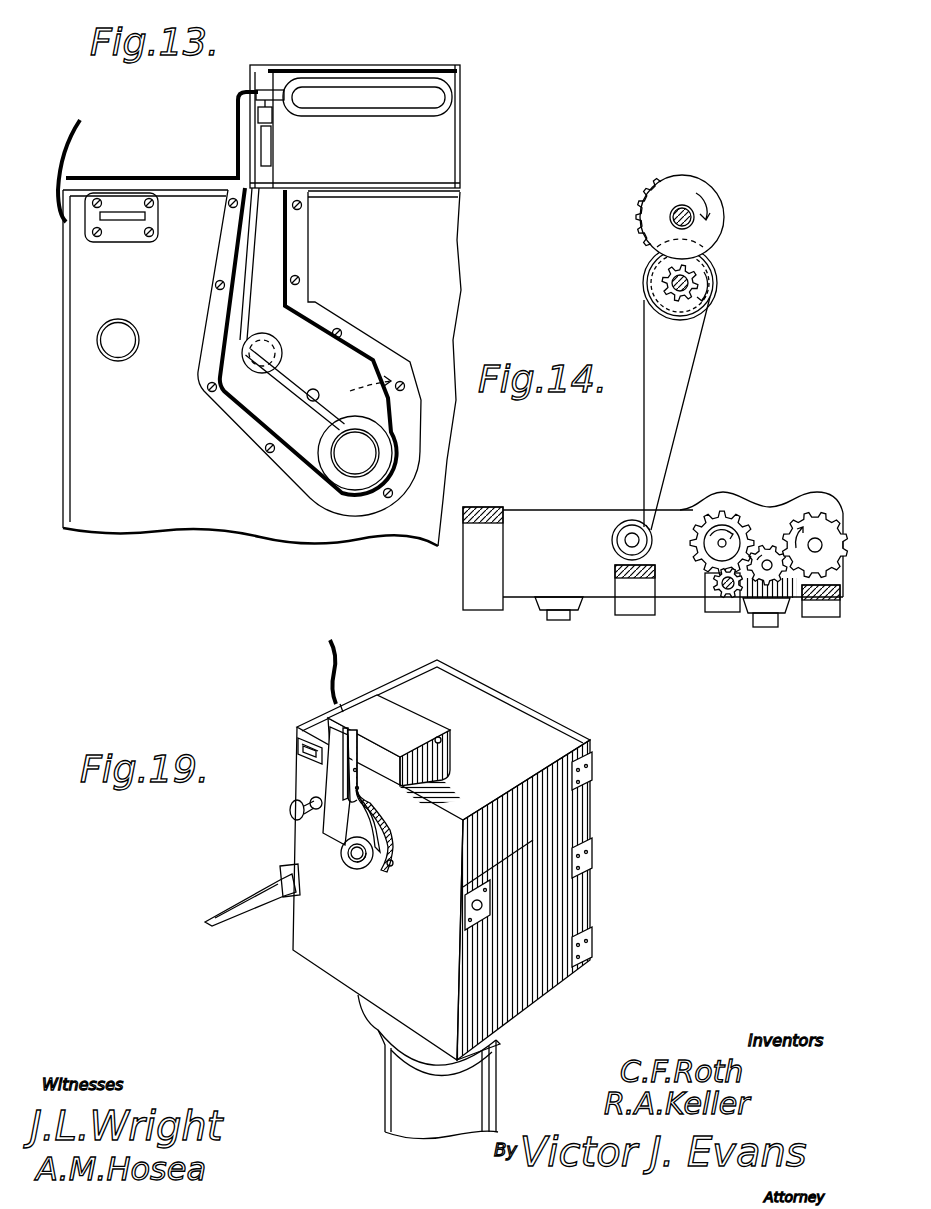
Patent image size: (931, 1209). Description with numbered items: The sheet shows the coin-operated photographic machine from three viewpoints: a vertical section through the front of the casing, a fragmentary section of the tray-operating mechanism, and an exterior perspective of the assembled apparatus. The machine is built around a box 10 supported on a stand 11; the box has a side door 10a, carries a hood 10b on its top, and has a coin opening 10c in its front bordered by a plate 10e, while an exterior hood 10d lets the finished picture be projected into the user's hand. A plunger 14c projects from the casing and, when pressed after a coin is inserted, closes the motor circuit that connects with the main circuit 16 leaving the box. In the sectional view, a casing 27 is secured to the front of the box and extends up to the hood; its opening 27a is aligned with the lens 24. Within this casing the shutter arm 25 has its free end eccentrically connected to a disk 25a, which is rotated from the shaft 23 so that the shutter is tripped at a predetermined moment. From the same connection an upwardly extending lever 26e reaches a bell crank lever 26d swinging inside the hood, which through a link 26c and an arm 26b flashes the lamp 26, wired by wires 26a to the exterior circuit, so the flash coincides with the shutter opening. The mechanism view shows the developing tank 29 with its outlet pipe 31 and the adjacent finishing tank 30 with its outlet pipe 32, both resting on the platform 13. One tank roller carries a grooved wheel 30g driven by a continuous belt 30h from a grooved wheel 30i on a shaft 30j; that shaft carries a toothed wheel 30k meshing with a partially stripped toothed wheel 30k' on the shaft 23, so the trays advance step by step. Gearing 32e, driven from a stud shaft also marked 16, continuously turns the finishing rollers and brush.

In FIG. 13, the box 10 is at (462, 212).
In FIG. 19, the box 10 is at (533, 726).
In FIG. 19, the side door 10a is at (572, 900).
In FIG. 13, the hood 10b is at (420, 72).
In FIG. 19, the hood 10b is at (403, 718).
In FIG. 13, the coin opening 10c is at (157, 217).
In FIG. 19, the coin opening 10c is at (308, 758).
In FIG. 19, the exterior hood 10d is at (280, 878).
In FIG. 13, the plate 10e is at (128, 233).
In FIG. 19, the plate 10e is at (298, 740).
In FIG. 19, the stand 11 is at (387, 1086).
In FIG. 14, the platform 13 is at (506, 557).
In FIG. 13, the plunger 14c is at (117, 350).
In FIG. 19, the plunger 14c is at (290, 812).
In FIG. 13, the main circuit 16 is at (74, 138).
In FIG. 14, the main circuit 16 is at (729, 590).
In FIG. 19, the main circuit 16 is at (337, 640).
In FIG. 14, the shaft 23 is at (678, 210).
In FIG. 13, the lens 24 is at (343, 456).
In FIG. 19, the lens 24 is at (370, 860).
In FIG. 13, the shutter arm 25 is at (306, 400).
In FIG. 13, the disk 25a is at (283, 353).
In FIG. 13, the lamp 26 is at (372, 118).
In FIG. 13, the wires 26a is at (162, 166).
In FIG. 19, the wires 26a is at (348, 700).
In FIG. 13, the arm 26b is at (278, 104).
In FIG. 13, the link 26c is at (266, 118).
In FIG. 13, the bell crank lever 26d is at (262, 130).
In FIG. 13, the lever 26e is at (258, 245).
In FIG. 13, the casing 27 is at (347, 352).
In FIG. 19, the casing 27 is at (337, 827).
In FIG. 19, the opening 27a is at (357, 863).
In FIG. 14, the developing tank 29 is at (533, 580).
In FIG. 14, the finishing tank 30 is at (797, 600).
In FIG. 14, the grooved wheel 30g is at (620, 530).
In FIG. 14, the belt 30h is at (684, 378).
In FIG. 14, the grooved wheel 30i is at (698, 274).
In FIG. 14, the shaft 30j is at (680, 296).
In FIG. 14, the toothed wheel 30k is at (713, 283).
In FIG. 14, the partially stripped toothed wheel 30k' is at (748, 206).
In FIG. 14, the outlet pipe 31 is at (563, 620).
In FIG. 14, the outlet pipe 32 is at (762, 613).
In FIG. 14, the gearing 32e is at (766, 547).